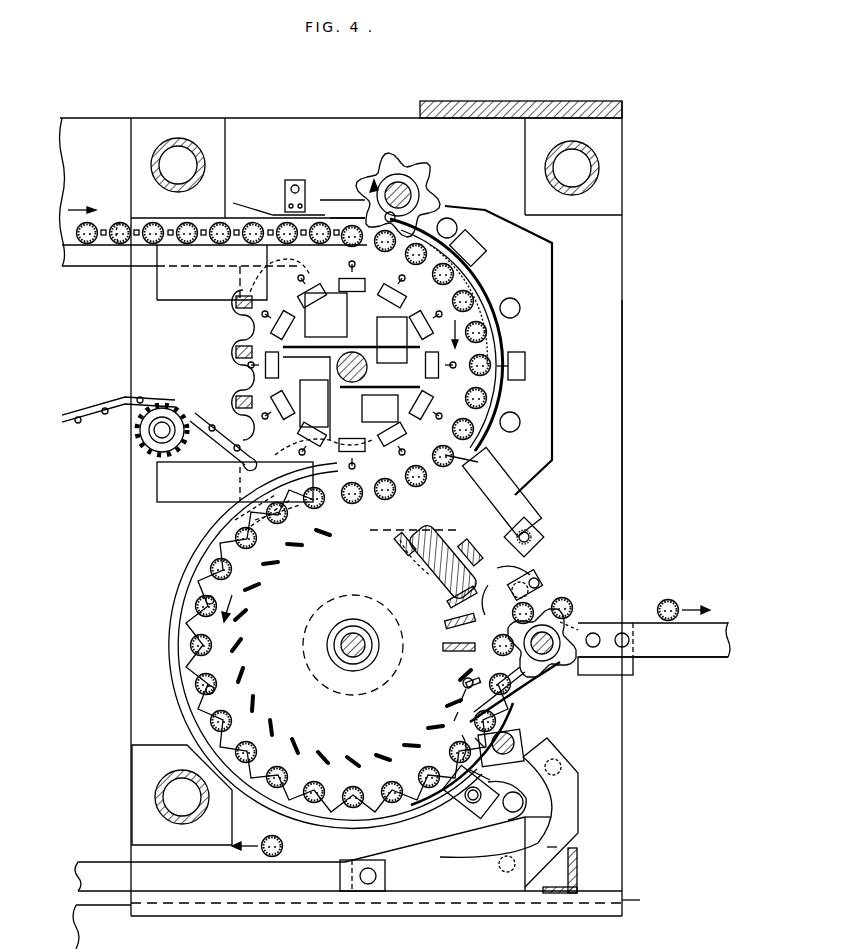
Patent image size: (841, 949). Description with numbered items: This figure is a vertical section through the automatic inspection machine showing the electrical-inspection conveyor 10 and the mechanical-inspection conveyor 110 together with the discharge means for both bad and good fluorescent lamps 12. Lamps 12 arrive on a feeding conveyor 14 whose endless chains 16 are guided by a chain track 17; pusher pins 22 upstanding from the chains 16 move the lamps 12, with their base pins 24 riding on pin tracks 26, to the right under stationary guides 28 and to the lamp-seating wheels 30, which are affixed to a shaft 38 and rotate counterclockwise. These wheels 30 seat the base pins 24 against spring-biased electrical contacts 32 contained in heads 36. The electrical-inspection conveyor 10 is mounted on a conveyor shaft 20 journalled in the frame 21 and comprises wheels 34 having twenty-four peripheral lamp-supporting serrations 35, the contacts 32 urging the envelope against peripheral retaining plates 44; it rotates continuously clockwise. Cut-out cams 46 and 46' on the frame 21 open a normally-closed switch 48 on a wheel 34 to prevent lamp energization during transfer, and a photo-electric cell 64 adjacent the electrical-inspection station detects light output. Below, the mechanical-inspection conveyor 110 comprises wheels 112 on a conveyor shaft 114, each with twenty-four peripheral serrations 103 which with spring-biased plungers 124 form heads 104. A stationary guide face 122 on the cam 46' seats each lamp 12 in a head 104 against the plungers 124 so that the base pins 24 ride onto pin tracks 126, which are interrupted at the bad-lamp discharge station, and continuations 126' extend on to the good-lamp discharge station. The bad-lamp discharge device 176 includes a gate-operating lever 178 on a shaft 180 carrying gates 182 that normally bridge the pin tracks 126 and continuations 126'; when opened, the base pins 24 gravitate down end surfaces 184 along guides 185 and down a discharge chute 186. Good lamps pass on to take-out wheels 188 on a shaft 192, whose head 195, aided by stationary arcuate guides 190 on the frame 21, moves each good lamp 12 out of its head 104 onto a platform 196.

The electrical-inspection conveyor 10 is at (226, 340).
The fluorescent lamp 12 is at (150, 247).
The feeding conveyor 14 is at (94, 268).
The endless chains 16 is at (62, 250).
The chain track 17 is at (112, 260).
The conveyor shaft 20 is at (340, 367).
The frame 21 is at (615, 445).
The pusher pins 22 is at (202, 228).
The base pins 24 is at (116, 225).
The pin tracks 26 is at (176, 218).
The stationary guides 28 is at (327, 200).
The lamp-seating wheels 30 is at (420, 172).
The spring-biased electrical contacts 32 is at (235, 362).
The wheels 34 is at (470, 292).
The peripheral lamp-supporting serrations 35 is at (495, 305).
The heads 36 is at (238, 405).
The shaft 38 is at (398, 182).
The peripheral retaining plates 44 is at (440, 215).
The cut-out cam 46 is at (429, 317).
The cut-out cam 46' is at (294, 357).
The normally-closed switch 48 is at (353, 360).
The photo-electric cell 64 is at (493, 484).
The peripheral serrations 103 is at (272, 535).
The head 104 is at (468, 570).
The mechanical-inspection conveyor 110 is at (200, 632).
The wheels 112 is at (202, 664).
The conveyor shaft 114 is at (340, 644).
The stationary guide face 122 is at (255, 480).
The spring-biased plungers 124 is at (424, 530).
The pin tracks 126 is at (310, 647).
The continuations of the pin tracks 126' is at (491, 733).
The bad-lamp discharge device 176 is at (531, 733).
The gate-operating lever 178 is at (455, 692).
The shaft 180 is at (550, 750).
The gates 182 is at (508, 768).
The end surfaces 184 is at (480, 808).
The guides 185 is at (508, 815).
The discharge chute 186 is at (404, 862).
The take-out wheels 188 is at (588, 620).
The stationary arcuate guides 190 is at (545, 582).
The shaft 192 is at (565, 668).
The head 195 is at (586, 664).
The platform 196 is at (708, 658).